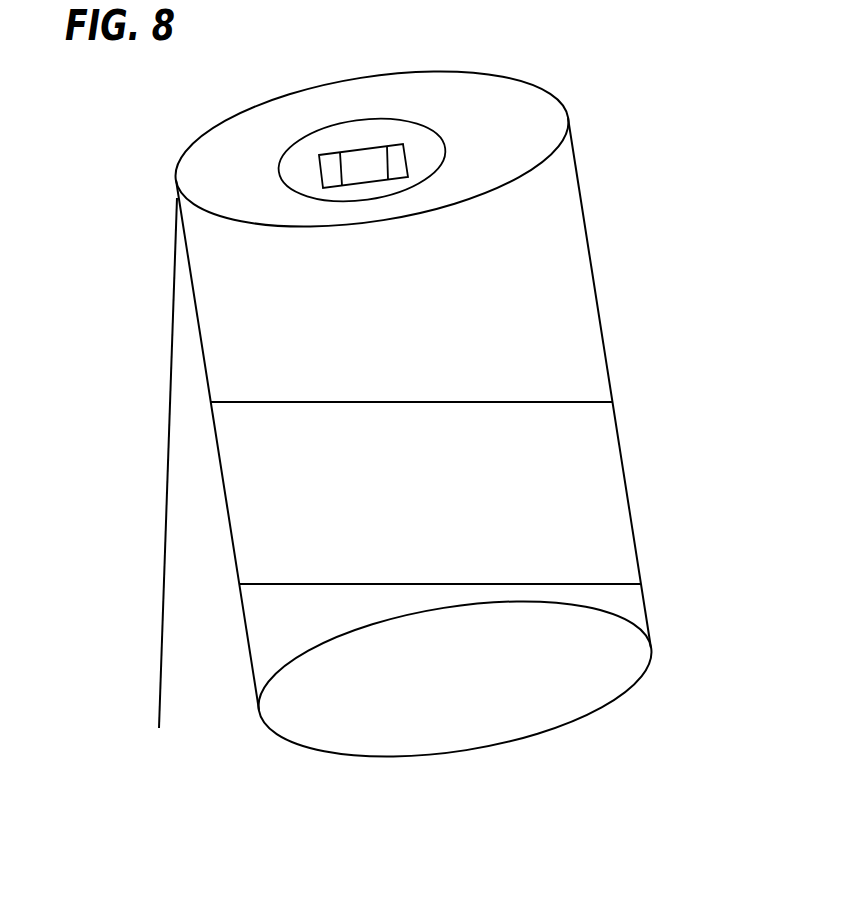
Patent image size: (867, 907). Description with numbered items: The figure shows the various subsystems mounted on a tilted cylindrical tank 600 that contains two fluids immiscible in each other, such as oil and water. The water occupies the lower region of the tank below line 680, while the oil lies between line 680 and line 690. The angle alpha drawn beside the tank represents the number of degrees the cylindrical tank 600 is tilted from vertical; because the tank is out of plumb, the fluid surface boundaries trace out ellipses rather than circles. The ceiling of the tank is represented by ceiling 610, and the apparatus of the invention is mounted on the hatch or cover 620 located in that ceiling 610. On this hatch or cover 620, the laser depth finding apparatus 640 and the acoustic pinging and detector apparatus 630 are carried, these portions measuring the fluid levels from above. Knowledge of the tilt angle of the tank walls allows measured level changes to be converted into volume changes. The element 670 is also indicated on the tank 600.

The tilted cylindrical tank 600 is at (580, 137).
The ceiling 610 is at (428, 113).
The hatch or cover 620 is at (365, 135).
The acoustic pinging and detector apparatus 630 is at (398, 135).
The laser depth finding apparatus 640 is at (315, 150).
The upper boundary line 670 is at (438, 413).
The line 680 is at (300, 578).
The line 690 is at (188, 412).